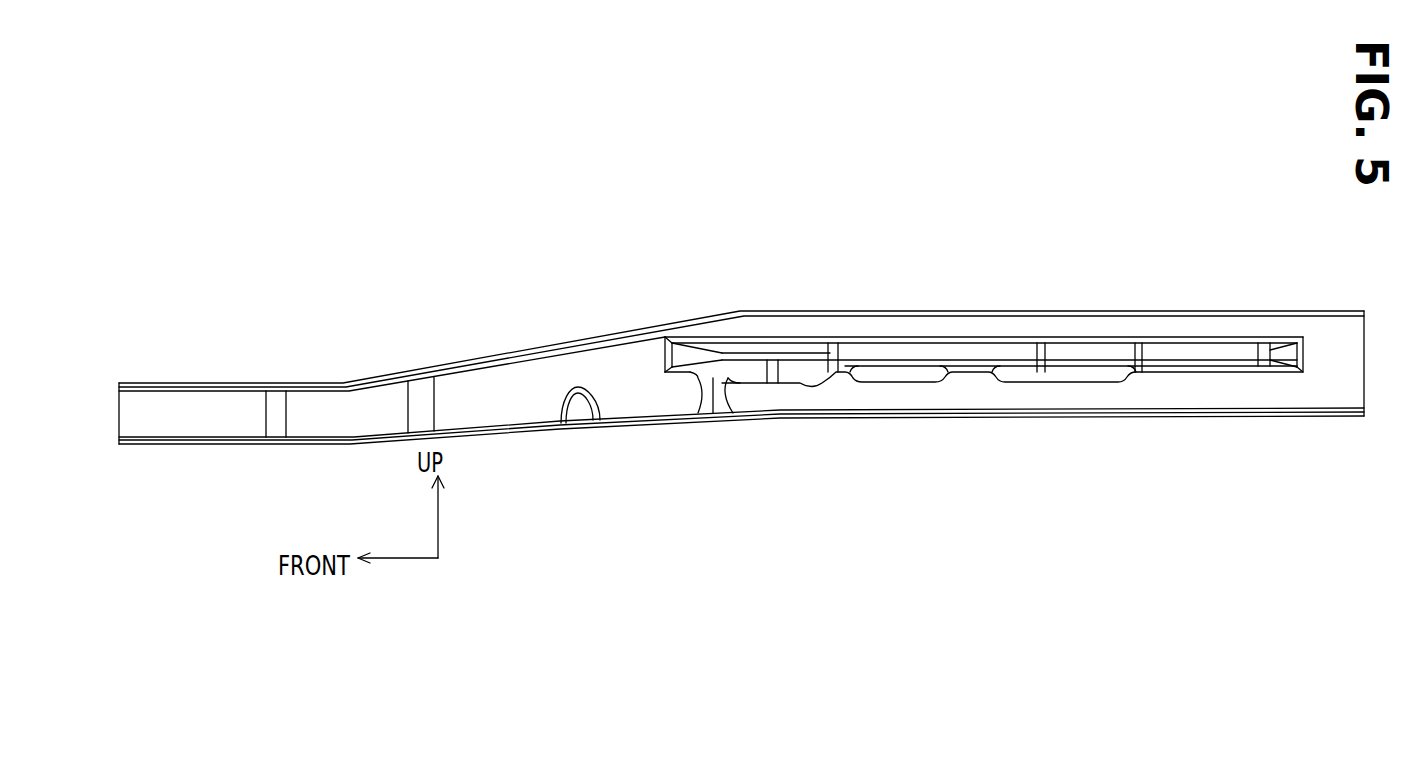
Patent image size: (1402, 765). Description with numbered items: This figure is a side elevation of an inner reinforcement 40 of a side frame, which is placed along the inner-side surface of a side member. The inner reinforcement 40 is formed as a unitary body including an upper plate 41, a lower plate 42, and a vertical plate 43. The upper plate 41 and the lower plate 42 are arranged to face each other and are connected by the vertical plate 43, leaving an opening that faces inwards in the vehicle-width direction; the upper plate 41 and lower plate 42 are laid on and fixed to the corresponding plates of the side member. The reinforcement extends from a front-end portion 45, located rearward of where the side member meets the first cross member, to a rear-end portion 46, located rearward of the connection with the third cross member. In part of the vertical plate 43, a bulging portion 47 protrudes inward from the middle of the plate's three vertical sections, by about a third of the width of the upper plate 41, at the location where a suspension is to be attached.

The inner reinforcement 40 is at (732, 391).
The upper plate 41 is at (213, 382).
The lower plate 42 is at (213, 447).
The vertical plate 43 is at (180, 424).
The front-end portion 45 is at (117, 412).
The rear-end portion 46 is at (1366, 357).
The bulging portion 47 is at (994, 353).